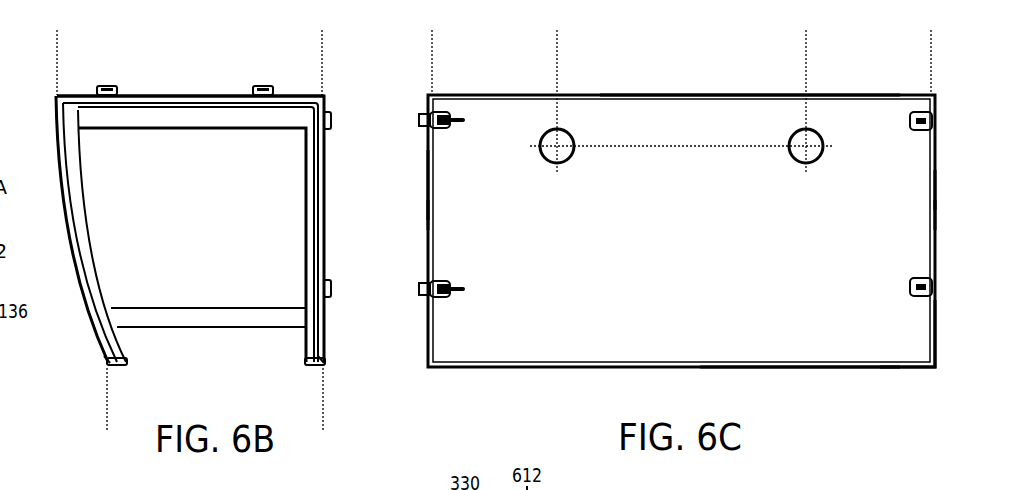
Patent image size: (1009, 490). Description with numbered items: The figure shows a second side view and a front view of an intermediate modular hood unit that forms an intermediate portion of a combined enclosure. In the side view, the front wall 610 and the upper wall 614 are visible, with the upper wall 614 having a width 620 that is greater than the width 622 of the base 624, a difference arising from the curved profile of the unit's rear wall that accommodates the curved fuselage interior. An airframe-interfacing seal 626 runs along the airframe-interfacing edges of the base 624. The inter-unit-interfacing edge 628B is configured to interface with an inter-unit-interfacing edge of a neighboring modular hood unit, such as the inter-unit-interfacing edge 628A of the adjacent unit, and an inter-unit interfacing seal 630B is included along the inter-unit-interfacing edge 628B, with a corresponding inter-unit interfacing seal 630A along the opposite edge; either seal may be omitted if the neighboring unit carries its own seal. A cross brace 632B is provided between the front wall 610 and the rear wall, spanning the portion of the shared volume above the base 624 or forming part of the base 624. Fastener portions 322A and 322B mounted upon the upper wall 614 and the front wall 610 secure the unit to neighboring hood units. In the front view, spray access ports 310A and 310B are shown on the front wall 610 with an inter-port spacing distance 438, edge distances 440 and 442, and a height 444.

In FIG. 6C, the spray access port 310A is at (810, 150).
In FIG. 6C, the spray access port 310B is at (561, 150).
In FIG. 6B, the fastener portion 322A is at (110, 86).
In FIG. 6C, the fastener portion 322A is at (434, 115).
In FIG. 6C, the fastener portion 322B is at (929, 127).
In FIG. 6C, the inter-port spacing distance 438 is at (804, 62).
In FIG. 6C, the edge distance 440 is at (929, 62).
In FIG. 6C, the edge distance 442 is at (555, 62).
In FIG. 6C, the height 444 is at (681, 149).
In FIG. 6B, the front wall 610 is at (190, 229).
In FIG. 6C, the front wall 610 is at (453, 185).
In FIG. 6B, the upper wall 614 is at (232, 93).
In FIG. 6C, the upper wall 614 is at (763, 93).
In FIG. 6B, the width of upper wall 620 is at (321, 62).
In FIG. 6B, the width of base 622 is at (322, 395).
In FIG. 6B, the base 624 is at (125, 368).
In FIG. 6C, the base 624 is at (851, 369).
In FIG. 6B, the airframe-interfacing seal 626 is at (108, 363).
In FIG. 6C, the airframe-interfacing seal 626 is at (890, 364).
In FIG. 6C, the inter-unit-interfacing edge 628A is at (937, 213).
In FIG. 6B, the inter-unit-interfacing edge 628B is at (82, 123).
In FIG. 6C, the inter-unit-interfacing edge 628B is at (428, 211).
In FIG. 6C, the inter-unit interfacing seal 630A is at (934, 192).
In FIG. 6B, the inter-unit interfacing seal 630B is at (73, 182).
In FIG. 6C, the inter-unit interfacing seal 630B is at (429, 181).
In FIG. 6B, the cross brace 632B is at (163, 317).